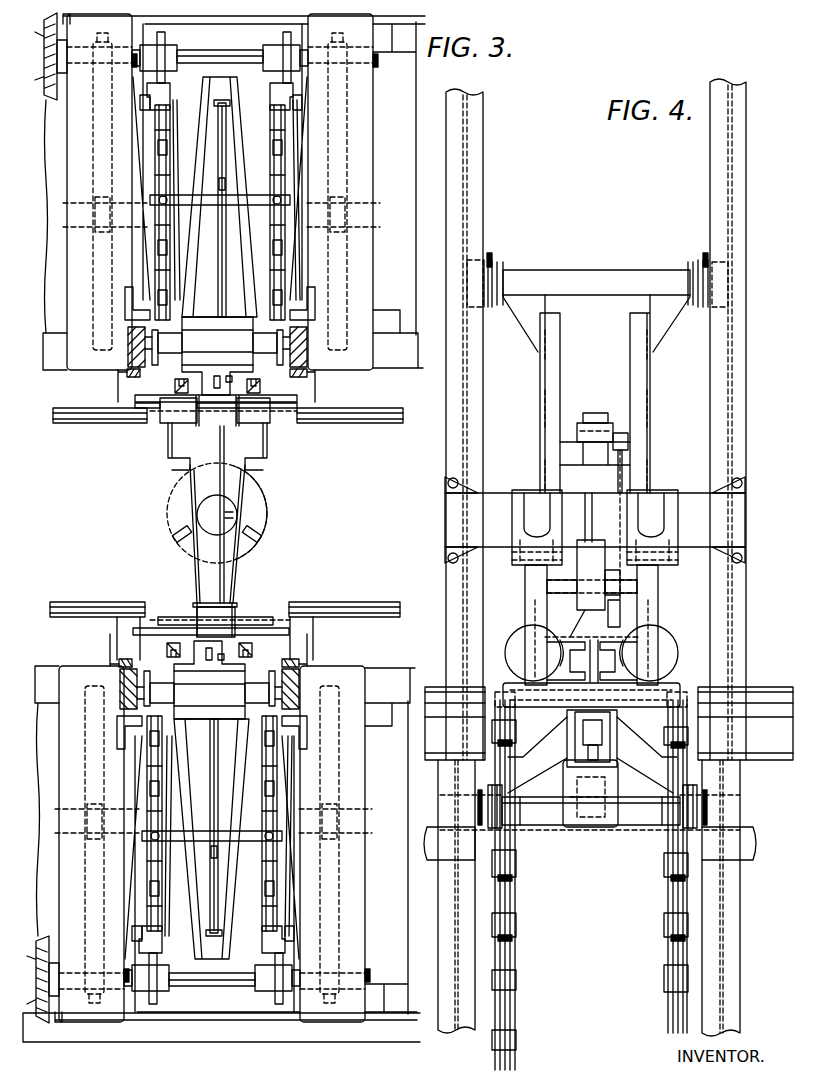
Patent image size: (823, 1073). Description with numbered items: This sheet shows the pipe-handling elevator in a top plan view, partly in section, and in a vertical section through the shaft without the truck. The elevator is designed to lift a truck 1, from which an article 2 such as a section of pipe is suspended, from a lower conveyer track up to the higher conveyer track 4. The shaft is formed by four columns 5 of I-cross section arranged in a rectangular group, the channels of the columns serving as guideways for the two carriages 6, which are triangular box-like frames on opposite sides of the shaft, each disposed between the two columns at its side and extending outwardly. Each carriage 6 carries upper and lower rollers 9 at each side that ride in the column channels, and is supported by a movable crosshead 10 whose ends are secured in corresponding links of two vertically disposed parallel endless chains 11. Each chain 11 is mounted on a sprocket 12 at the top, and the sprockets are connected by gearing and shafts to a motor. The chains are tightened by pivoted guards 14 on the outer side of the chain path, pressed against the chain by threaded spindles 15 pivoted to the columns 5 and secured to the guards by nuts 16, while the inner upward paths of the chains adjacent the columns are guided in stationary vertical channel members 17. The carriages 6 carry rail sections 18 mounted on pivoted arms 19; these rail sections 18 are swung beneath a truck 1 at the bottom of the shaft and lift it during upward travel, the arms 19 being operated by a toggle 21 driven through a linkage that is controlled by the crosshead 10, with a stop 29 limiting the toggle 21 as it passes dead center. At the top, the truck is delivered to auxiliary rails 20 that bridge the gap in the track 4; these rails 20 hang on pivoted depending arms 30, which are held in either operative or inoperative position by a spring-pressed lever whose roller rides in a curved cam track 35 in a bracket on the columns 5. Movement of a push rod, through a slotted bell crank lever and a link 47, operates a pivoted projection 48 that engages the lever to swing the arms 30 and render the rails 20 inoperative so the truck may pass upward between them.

In FIG. 3, the truck 1 is at (172, 452).
In FIG. 3, the article 2 is at (266, 513).
In FIG. 3, the conveyer track 4 is at (349, 424).
In FIG. 4, the conveyer track 4 is at (765, 690).
In FIG. 3, the column 5 is at (120, 372).
In FIG. 4, the column 5 is at (487, 213).
In FIG. 3, the carriage 6 is at (173, 354).
In FIG. 4, the carriage 6 is at (650, 407).
In FIG. 3, the roller 9 is at (133, 346).
In FIG. 4, the roller 9 is at (492, 257).
In FIG. 3, the crosshead 10 is at (192, 193).
In FIG. 4, the crosshead 10 is at (558, 716).
In FIG. 3, the endless chain 11 is at (165, 246).
In FIG. 4, the endless chain 11 is at (512, 1005).
In FIG. 3, the sprocket 12 is at (162, 268).
In FIG. 4, the sprocket 12 is at (504, 947).
In FIG. 3, the guard 14 is at (170, 108).
In FIG. 3, the threaded spindle 15 is at (295, 140).
In FIG. 3, the nut 16 is at (298, 100).
In FIG. 3, the vertical channel member 17 is at (150, 300).
In FIG. 3, the rail section 18 is at (216, 412).
In FIG. 4, the rail section 18 is at (511, 683).
In FIG. 4, the pivoted arm 19 is at (572, 732).
In FIG. 3, the auxiliary rail 20 is at (287, 406).
In FIG. 4, the auxiliary rail 20 is at (687, 685).
In FIG. 4, the toggle 21 is at (607, 743).
In FIG. 4, the stop 29 is at (600, 768).
In FIG. 3, the depending arm 30 is at (261, 388).
In FIG. 4, the depending arm 30 is at (659, 610).
In FIG. 4, the cam track 35 is at (595, 553).
In FIG. 4, the link 47 is at (618, 478).
In FIG. 4, the pivoted projection 48 is at (595, 413).